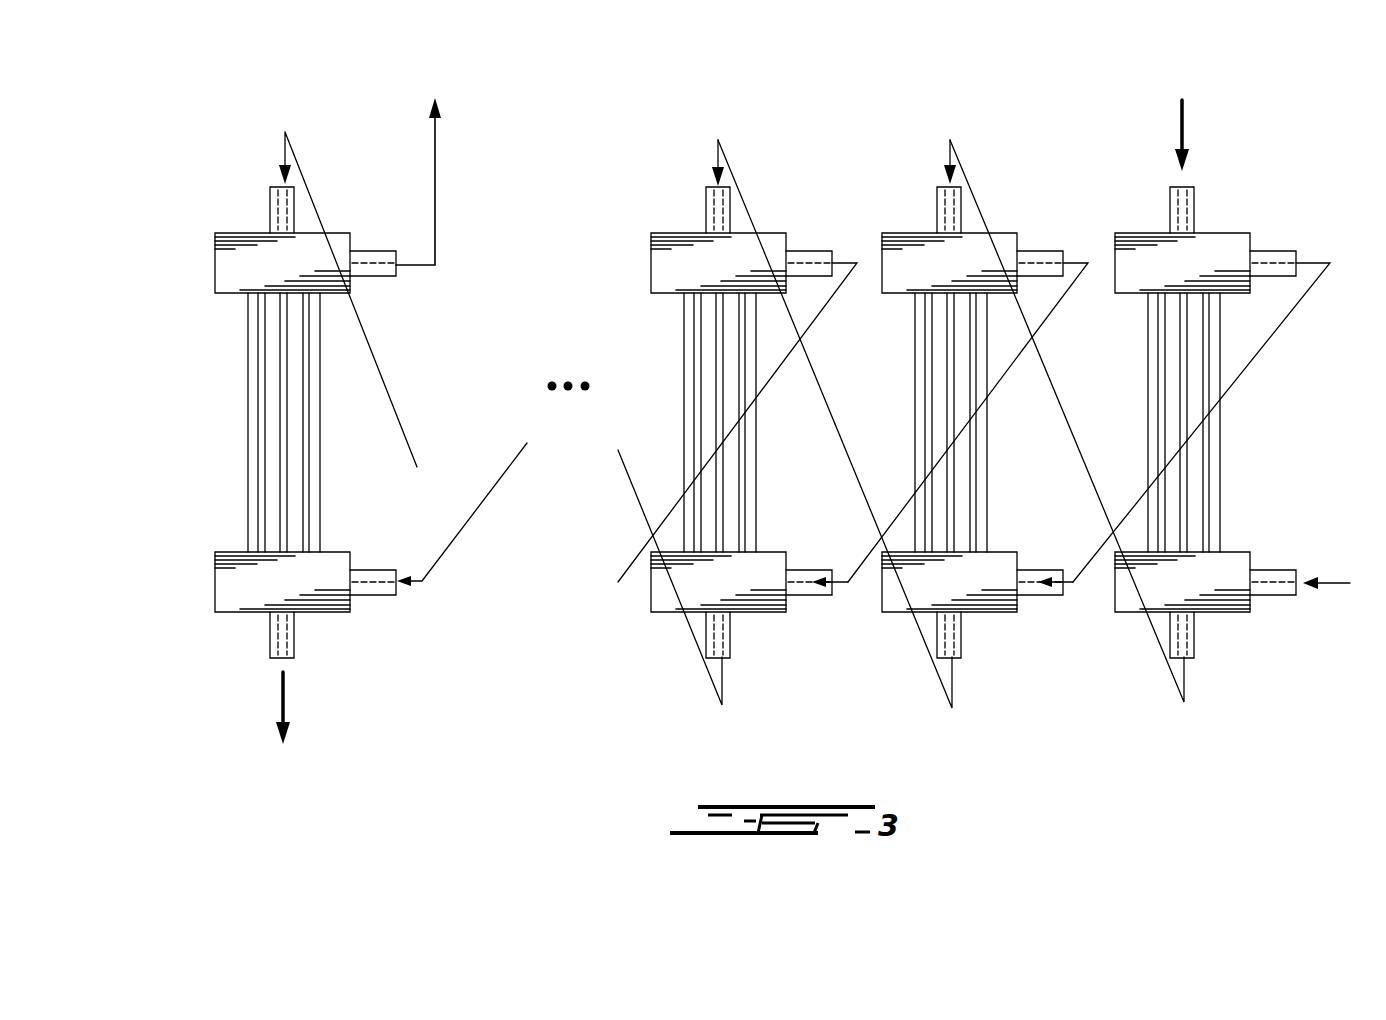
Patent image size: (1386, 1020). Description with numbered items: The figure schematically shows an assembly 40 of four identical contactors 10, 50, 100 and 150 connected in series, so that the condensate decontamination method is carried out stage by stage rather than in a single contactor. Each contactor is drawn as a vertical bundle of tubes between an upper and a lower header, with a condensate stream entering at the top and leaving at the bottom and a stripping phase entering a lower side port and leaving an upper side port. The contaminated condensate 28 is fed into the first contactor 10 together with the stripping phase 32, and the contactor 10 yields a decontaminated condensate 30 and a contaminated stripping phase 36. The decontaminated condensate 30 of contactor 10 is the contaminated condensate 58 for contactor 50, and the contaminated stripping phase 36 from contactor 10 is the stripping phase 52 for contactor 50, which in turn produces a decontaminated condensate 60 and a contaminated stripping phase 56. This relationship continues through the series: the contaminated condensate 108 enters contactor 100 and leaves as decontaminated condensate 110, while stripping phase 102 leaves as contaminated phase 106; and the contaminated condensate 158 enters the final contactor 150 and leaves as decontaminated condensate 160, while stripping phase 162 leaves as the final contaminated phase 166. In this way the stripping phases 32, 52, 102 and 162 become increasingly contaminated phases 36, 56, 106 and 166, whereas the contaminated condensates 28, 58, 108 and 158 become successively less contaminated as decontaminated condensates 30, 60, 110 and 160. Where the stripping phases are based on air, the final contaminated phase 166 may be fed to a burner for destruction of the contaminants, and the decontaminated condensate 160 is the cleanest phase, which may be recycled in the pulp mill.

The contactor 10 is at (1245, 433).
The contaminated condensate 28 is at (1182, 135).
The decontaminated condensate 30 is at (1162, 650).
The stripping phase 32 is at (1350, 583).
The contaminated stripping phase 36 is at (1303, 263).
The assembly 40 is at (645, 150).
The contactor 50 is at (874, 224).
The stripping phase 52 is at (1073, 584).
The contaminated stripping phase 56 is at (1058, 303).
The contaminated condensate 58 is at (950, 150).
The decontaminated condensate 60 is at (928, 650).
The contactor 100 is at (638, 268).
The stripping phase 102 is at (848, 584).
The contaminated stripping phase 106 is at (790, 305).
The contaminated condensate 108 is at (718, 140).
The decontaminated condensate 110 is at (700, 650).
The contactor 150 is at (248, 420).
The contaminated condensate 158 is at (283, 150).
The decontaminated condensate 160 is at (283, 703).
The stripping phase 162 is at (440, 560).
The contaminated stripping phase 166 is at (435, 168).